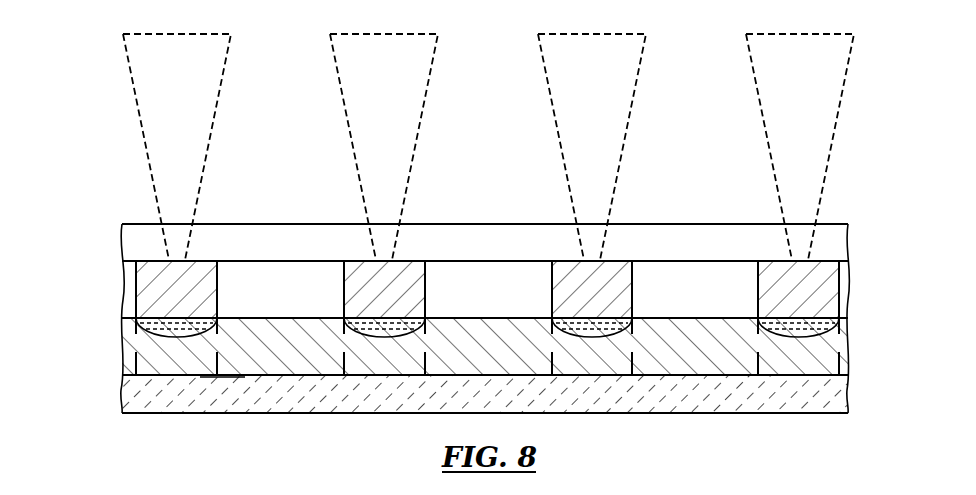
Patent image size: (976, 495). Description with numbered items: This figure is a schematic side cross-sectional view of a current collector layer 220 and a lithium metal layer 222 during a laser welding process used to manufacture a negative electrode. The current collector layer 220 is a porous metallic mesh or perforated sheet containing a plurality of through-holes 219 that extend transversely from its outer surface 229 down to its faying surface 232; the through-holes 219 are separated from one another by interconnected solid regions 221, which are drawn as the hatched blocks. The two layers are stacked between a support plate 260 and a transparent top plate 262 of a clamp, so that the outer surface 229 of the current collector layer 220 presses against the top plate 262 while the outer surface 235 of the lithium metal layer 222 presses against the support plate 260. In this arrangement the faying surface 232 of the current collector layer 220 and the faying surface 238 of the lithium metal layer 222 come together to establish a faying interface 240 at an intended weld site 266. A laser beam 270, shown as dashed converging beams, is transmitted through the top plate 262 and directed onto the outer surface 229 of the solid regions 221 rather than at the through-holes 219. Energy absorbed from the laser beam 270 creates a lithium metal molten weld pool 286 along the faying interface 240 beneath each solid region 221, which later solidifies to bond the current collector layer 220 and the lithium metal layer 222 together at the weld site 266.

The top plate 262 is at (848, 240).
The current collector layer 220 is at (848, 285).
The lithium metal layer 222 is at (848, 345).
The laser beam 270 is at (148, 165).
The through-holes 219 is at (317, 272).
The outer surface 229 is at (414, 260).
The interconnected solid regions 221 is at (755, 278).
The faying interface 240 is at (114, 317).
The faying surface 238 is at (297, 318).
The molten weld pool 286 is at (427, 334).
The faying surface 232 is at (630, 328).
The outer surface 235 is at (222, 378).
The weld site 266 is at (634, 362).
The support plate 260 is at (815, 410).